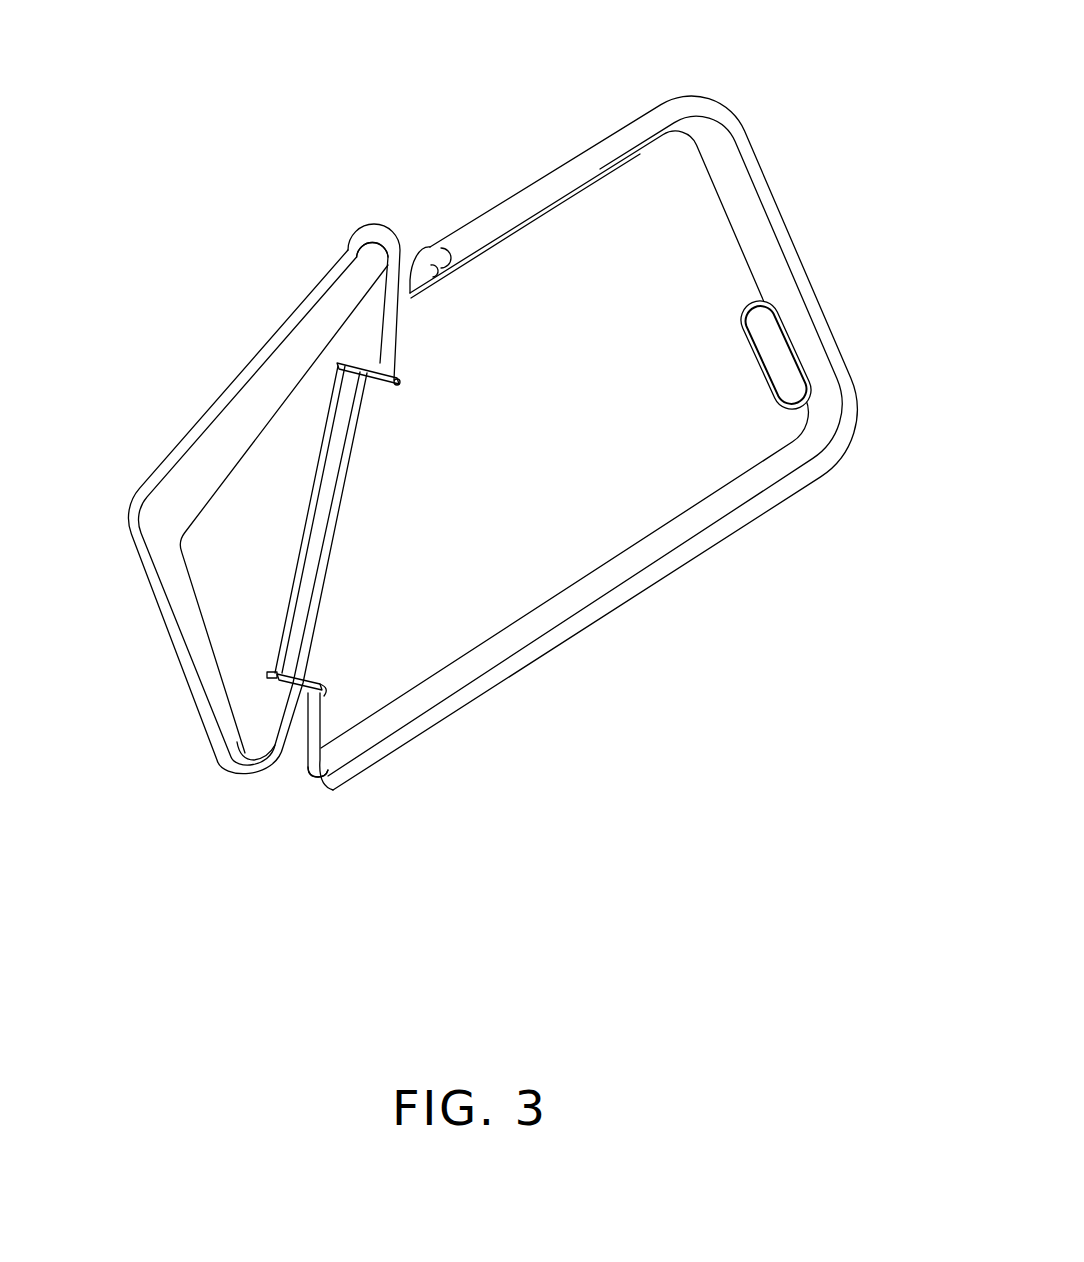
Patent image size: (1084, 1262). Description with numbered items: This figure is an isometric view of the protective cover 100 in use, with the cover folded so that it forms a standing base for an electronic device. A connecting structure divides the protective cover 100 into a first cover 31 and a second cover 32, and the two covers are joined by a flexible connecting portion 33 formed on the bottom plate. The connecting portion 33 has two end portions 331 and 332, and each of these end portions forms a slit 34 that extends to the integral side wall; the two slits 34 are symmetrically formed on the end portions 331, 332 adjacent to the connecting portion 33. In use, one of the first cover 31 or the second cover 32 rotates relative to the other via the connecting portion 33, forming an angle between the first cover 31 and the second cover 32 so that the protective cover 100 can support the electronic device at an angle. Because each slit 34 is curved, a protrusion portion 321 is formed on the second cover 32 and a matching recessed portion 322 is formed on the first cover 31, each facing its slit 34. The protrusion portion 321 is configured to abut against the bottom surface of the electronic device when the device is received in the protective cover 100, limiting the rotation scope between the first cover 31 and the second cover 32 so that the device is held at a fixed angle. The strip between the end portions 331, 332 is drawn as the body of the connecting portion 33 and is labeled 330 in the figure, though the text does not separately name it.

The protective cover 100 is at (400, 137).
The first cover 31 is at (554, 480).
The second cover 32 is at (237, 508).
The flexible connecting portion 33 is at (245, 515).
The slit 34 is at (411, 250).
The protrusion portion 321 is at (362, 348).
The recessed portion 322 is at (405, 334).
The connecting strip 330 is at (332, 477).
The end portion 331 is at (340, 366).
The end portion 332 is at (305, 676).